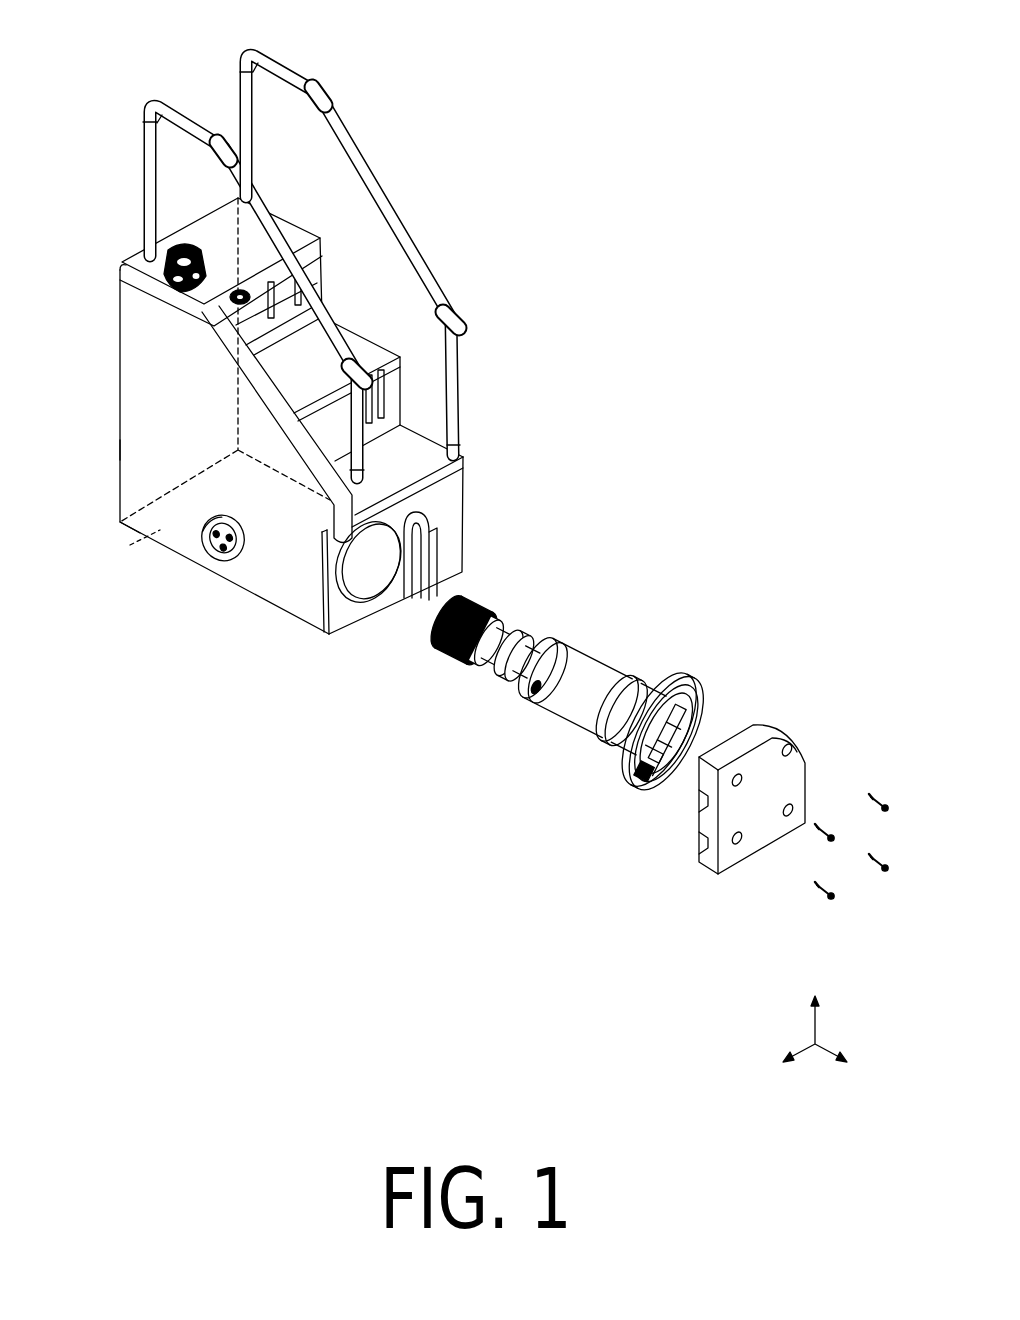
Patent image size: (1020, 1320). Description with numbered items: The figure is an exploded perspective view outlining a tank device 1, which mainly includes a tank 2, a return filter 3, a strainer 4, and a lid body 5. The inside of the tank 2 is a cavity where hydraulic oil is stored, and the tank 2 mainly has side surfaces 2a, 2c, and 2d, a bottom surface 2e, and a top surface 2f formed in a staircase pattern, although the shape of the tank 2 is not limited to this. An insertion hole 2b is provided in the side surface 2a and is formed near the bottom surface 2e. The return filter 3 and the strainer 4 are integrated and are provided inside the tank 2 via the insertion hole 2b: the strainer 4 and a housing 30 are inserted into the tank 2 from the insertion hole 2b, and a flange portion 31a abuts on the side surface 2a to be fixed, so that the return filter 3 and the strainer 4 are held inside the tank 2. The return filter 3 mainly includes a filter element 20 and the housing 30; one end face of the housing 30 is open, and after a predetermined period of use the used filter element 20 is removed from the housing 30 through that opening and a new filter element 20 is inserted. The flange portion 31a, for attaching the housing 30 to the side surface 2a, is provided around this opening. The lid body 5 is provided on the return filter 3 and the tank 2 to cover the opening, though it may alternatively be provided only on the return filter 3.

The tank device 1 is at (779, 35).
The tank 2 is at (122, 262).
The side surface 2a is at (340, 616).
The insertion hole 2b is at (352, 566).
The side surface 2c is at (267, 580).
The side surface 2d is at (130, 447).
The bottom surface 2e is at (157, 540).
The top surface 2f is at (298, 228).
The return filter 3 is at (618, 656).
The strainer 4 is at (502, 596).
The lid body 5 is at (788, 732).
The filter element 20 is at (658, 787).
The housing 30 is at (578, 717).
The flange portion 31a is at (700, 693).